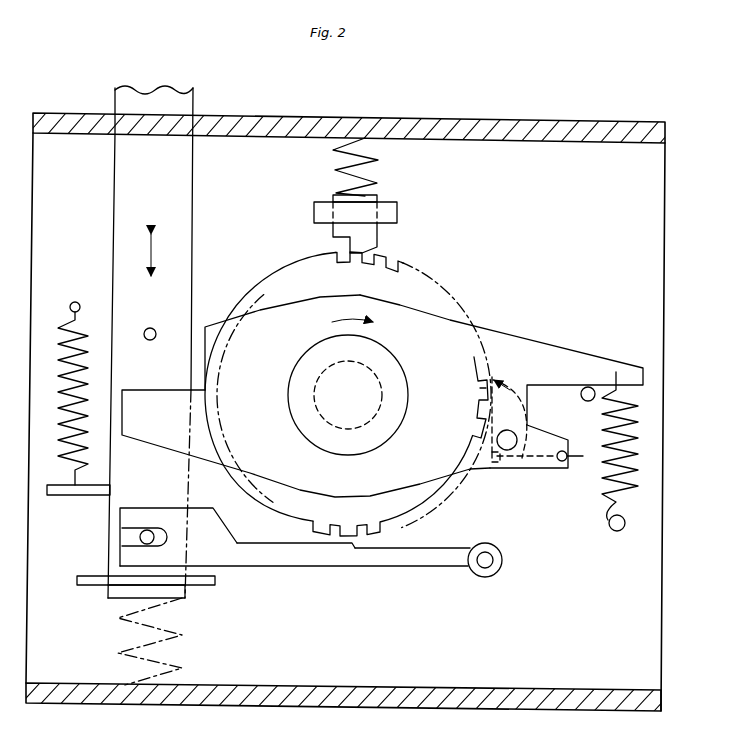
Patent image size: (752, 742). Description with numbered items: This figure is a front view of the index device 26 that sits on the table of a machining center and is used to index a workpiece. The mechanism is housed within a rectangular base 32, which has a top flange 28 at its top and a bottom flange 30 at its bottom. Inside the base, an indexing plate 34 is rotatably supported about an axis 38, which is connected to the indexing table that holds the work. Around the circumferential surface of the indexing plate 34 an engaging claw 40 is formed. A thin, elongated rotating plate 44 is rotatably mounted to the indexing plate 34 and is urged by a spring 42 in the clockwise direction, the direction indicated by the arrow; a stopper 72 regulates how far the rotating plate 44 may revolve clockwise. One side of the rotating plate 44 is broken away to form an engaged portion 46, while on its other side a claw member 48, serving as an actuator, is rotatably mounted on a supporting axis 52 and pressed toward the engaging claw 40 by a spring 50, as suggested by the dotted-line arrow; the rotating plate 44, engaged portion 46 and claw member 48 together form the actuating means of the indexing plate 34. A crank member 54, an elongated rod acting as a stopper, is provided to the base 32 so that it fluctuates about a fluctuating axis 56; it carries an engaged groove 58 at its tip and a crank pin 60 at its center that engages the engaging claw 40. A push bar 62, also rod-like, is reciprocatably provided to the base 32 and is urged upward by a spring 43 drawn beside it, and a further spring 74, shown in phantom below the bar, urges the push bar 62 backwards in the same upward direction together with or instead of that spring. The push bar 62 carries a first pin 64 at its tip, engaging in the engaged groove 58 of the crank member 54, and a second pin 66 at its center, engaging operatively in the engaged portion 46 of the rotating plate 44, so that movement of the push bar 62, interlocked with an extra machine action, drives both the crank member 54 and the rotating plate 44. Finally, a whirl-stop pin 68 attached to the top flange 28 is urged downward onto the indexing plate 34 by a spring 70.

The index device 26 is at (364, 405).
The top flange 28 is at (489, 113).
The bottom flange 30 is at (490, 709).
The rectangular base 32 is at (662, 313).
The indexing plate 34 is at (348, 378).
The axis 38 is at (365, 388).
The engaging claw 40 is at (397, 260).
The spring 42 is at (632, 462).
The spring 43 is at (58, 404).
The rotating plate 44 is at (382, 396).
The engaged portion 46 is at (143, 390).
The claw member 48 is at (527, 405).
The spring 50 is at (538, 468).
The supporting axis 52 is at (505, 450).
The crank member 54 is at (302, 557).
The fluctuating axis 56 is at (502, 553).
The engaged groove 58 is at (128, 532).
The crank pin 60 is at (342, 545).
The push bar 62 is at (186, 202).
The first pin 64 is at (146, 538).
The second pin 66 is at (155, 328).
The whirl-stop pin 68 is at (360, 236).
The spring 70 is at (368, 178).
The stopper 72 is at (590, 401).
The spring 74 is at (180, 632).